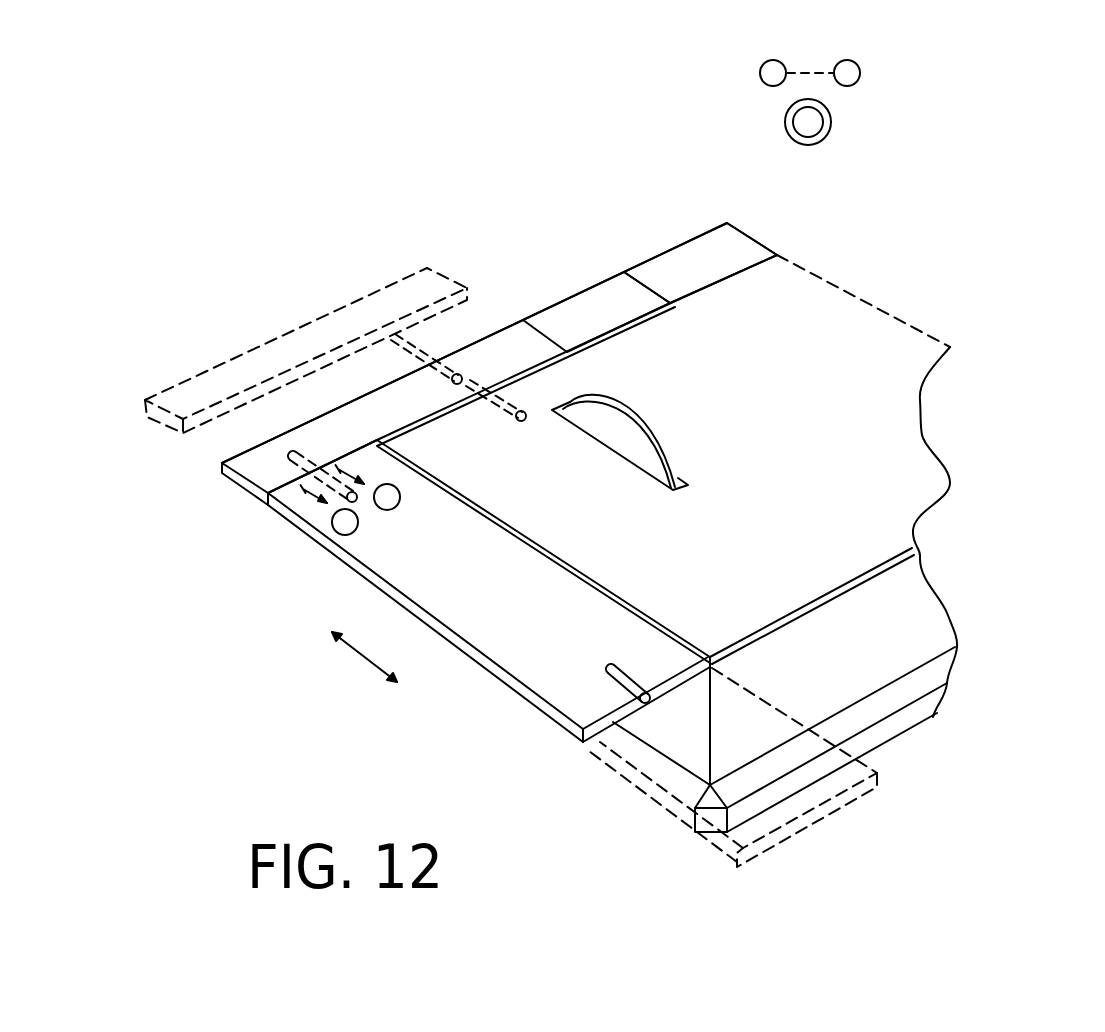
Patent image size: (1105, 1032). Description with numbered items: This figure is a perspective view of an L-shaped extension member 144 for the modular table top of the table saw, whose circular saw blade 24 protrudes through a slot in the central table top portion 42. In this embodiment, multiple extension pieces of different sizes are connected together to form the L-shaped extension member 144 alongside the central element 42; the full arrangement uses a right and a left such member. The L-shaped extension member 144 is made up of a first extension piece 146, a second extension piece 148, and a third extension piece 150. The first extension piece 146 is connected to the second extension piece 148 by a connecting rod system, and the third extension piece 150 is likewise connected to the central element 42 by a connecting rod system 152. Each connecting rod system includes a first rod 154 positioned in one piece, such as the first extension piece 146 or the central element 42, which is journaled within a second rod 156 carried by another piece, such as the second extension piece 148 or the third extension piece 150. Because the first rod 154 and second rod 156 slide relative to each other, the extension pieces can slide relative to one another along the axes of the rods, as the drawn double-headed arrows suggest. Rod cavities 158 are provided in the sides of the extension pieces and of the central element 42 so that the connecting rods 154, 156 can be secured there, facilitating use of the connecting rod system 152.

The circular saw blade 24 is at (643, 422).
The central table top portion 42 is at (908, 504).
The L-shaped extension member 144 is at (773, 255).
The first extension piece 146 is at (365, 550).
The second extension piece 148 is at (257, 463).
The third extension piece 150 is at (525, 350).
The connecting rod system 152 is at (323, 462).
The first rod 154 is at (825, 118).
The second rod 156 is at (828, 140).
The rod cavity 158 is at (633, 683).